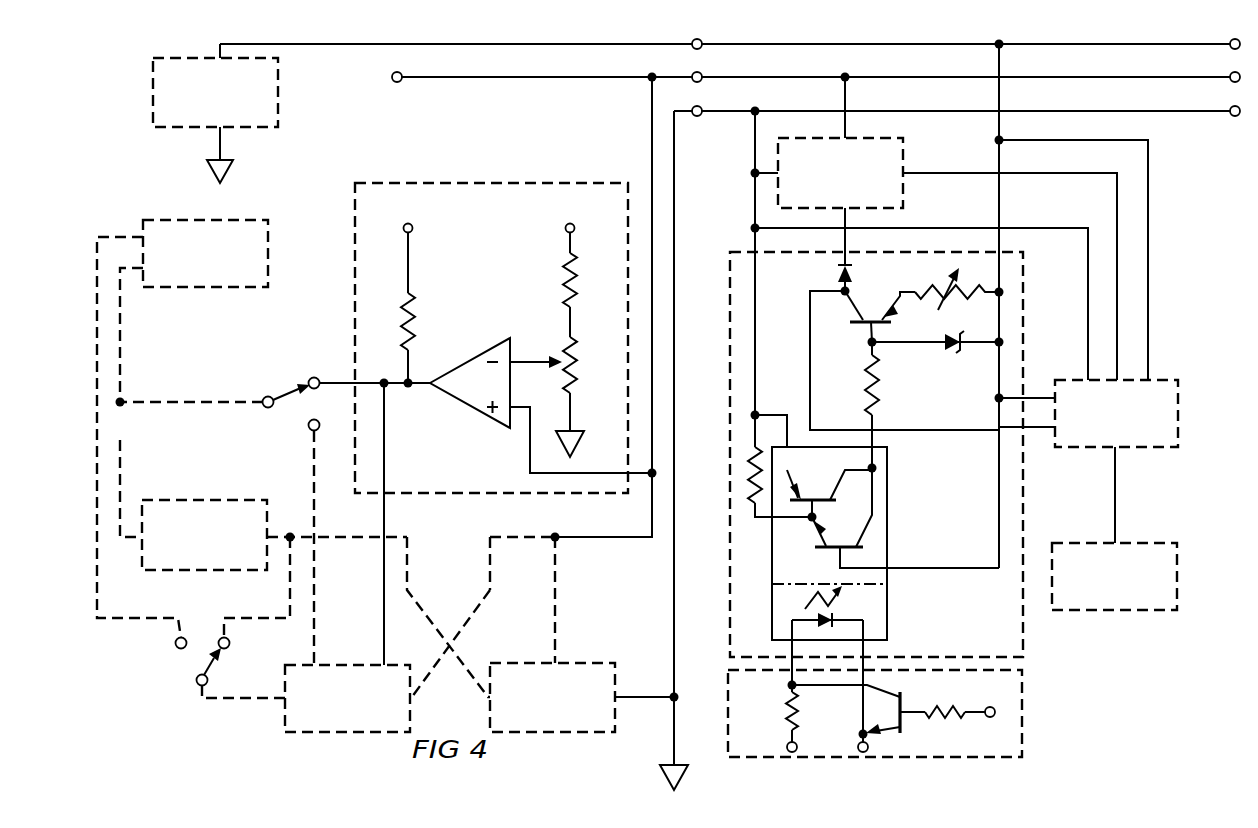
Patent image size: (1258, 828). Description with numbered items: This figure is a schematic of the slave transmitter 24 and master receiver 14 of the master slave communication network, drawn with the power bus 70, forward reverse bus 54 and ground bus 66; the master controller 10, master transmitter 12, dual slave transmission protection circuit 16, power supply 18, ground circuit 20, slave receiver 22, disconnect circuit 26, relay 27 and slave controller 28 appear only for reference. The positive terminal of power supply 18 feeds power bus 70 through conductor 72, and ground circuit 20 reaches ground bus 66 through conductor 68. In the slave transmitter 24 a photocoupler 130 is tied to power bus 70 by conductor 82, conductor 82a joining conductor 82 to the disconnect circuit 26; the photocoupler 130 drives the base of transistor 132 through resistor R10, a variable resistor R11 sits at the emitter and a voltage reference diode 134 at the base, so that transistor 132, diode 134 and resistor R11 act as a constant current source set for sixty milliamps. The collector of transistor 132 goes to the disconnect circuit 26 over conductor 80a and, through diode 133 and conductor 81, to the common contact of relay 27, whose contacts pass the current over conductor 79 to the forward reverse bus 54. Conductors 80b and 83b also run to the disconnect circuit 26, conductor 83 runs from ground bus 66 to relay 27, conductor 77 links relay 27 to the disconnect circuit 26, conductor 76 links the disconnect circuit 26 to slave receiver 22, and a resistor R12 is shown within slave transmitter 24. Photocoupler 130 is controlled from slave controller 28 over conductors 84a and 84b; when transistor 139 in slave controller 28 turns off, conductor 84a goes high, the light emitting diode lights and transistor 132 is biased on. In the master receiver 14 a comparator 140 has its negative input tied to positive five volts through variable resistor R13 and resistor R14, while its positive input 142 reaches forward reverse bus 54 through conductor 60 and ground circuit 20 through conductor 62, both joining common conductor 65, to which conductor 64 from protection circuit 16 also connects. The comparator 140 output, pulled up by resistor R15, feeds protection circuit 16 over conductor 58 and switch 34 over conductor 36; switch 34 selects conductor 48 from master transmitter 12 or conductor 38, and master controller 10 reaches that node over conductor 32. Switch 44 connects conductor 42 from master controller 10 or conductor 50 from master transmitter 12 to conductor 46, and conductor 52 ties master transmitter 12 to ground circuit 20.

The master controller 10 is at (172, 218).
The master transmitter 12 is at (178, 498).
The master receiver 14 is at (372, 182).
The dual slave transmission protection circuit 16 is at (300, 663).
The power supply 18 is at (196, 57).
The ground circuit 20 is at (532, 662).
The slave receiver 22 is at (1082, 543).
The slave transmitter 24 is at (1026, 473).
The disconnect circuit 26 is at (1125, 447).
The relay 27 is at (813, 138).
The slave controller 28 is at (1022, 693).
The conductor 32 is at (120, 345).
The switch 34 is at (290, 392).
The conductor 36 is at (344, 380).
The conductor 38 is at (314, 628).
The conductor 42 is at (168, 618).
The switch 44 is at (208, 664).
The conductor 46 is at (232, 698).
The conductor 48 is at (120, 455).
The conductor 50 is at (228, 618).
The conductor 52 is at (412, 612).
The forward reverse bus 54 is at (800, 77).
The conductor 58 is at (384, 602).
The conductor 60 is at (650, 478).
The conductor 62 is at (555, 602).
The conductor 64 is at (490, 602).
The common conductor 65 is at (652, 130).
The ground bus 66 is at (800, 111).
The conductor 68 is at (673, 640).
The power bus 70 is at (800, 44).
The conductor 72 is at (358, 44).
The conductor 76 is at (1117, 505).
The conductor 77 is at (1117, 208).
The conductor 79 is at (845, 103).
The conductor 80a is at (1028, 430).
The line 80b is at (1028, 396).
The conductor 81 is at (845, 230).
The conductor 82 is at (999, 132).
The conductor 82a is at (1148, 150).
The line 83 is at (755, 132).
The line 83b is at (1088, 330).
The conductor 84a is at (790, 657).
The conductor 84b is at (865, 664).
The photocoupler 130 is at (887, 488).
The transistor 132 is at (868, 330).
The diode 133 is at (843, 270).
The voltage reference diode 134 is at (950, 350).
The transistor 139 is at (902, 700).
The comparator 140 is at (500, 343).
The positive input 142 is at (530, 462).
The resistor R10 is at (849, 405).
The variable resistor R11 is at (955, 288).
The resistor R12 is at (763, 466).
The variable resistor R13 is at (584, 397).
The resistor R14 is at (579, 268).
The resistor R15 is at (418, 291).